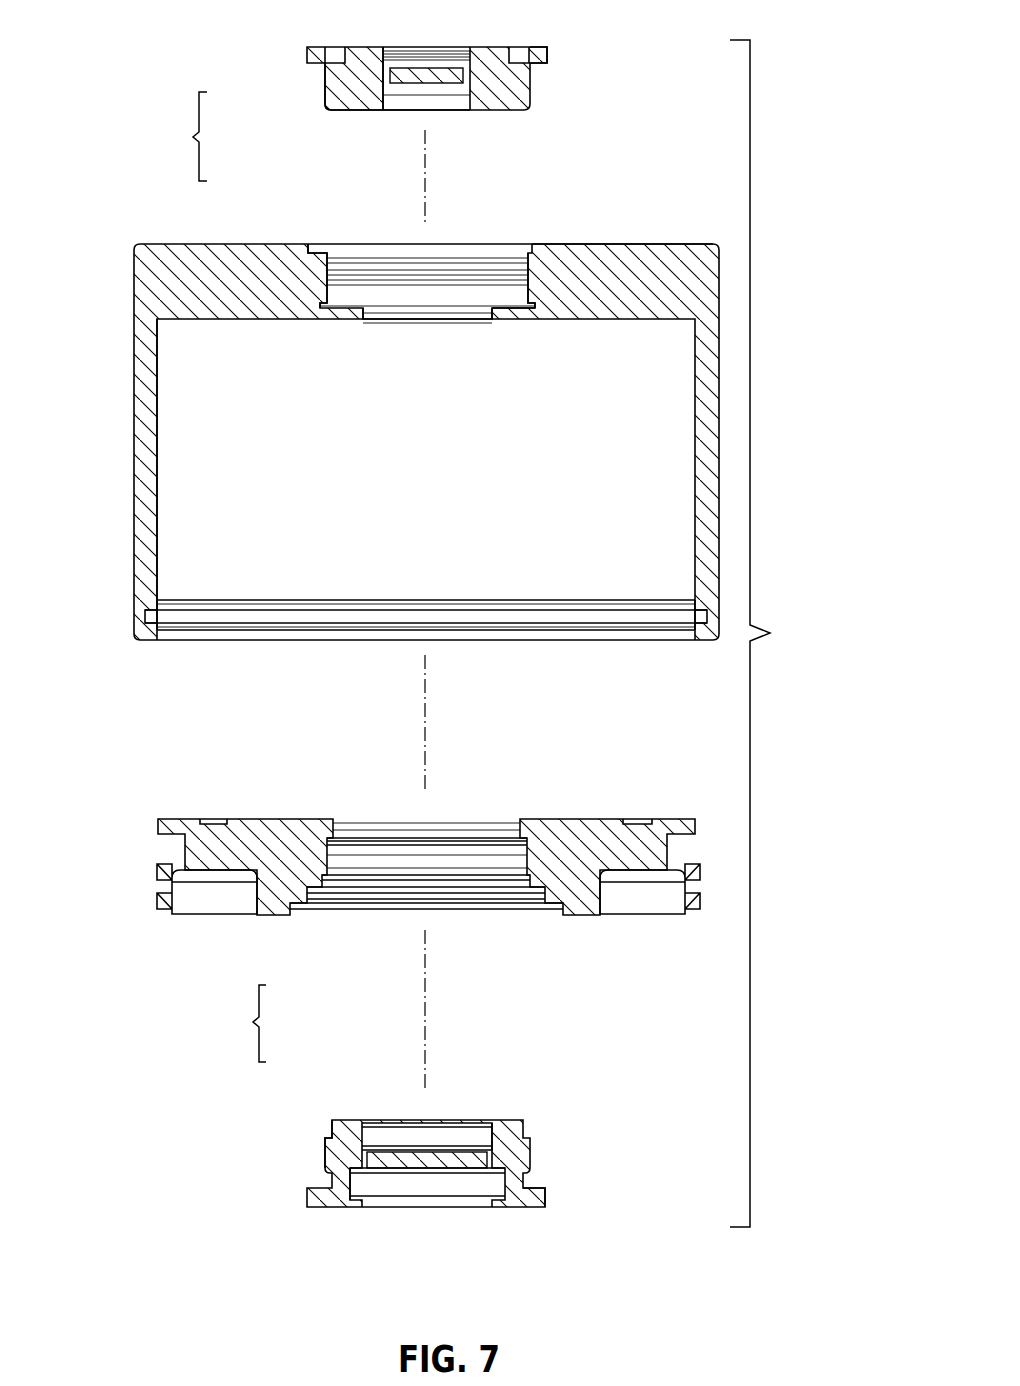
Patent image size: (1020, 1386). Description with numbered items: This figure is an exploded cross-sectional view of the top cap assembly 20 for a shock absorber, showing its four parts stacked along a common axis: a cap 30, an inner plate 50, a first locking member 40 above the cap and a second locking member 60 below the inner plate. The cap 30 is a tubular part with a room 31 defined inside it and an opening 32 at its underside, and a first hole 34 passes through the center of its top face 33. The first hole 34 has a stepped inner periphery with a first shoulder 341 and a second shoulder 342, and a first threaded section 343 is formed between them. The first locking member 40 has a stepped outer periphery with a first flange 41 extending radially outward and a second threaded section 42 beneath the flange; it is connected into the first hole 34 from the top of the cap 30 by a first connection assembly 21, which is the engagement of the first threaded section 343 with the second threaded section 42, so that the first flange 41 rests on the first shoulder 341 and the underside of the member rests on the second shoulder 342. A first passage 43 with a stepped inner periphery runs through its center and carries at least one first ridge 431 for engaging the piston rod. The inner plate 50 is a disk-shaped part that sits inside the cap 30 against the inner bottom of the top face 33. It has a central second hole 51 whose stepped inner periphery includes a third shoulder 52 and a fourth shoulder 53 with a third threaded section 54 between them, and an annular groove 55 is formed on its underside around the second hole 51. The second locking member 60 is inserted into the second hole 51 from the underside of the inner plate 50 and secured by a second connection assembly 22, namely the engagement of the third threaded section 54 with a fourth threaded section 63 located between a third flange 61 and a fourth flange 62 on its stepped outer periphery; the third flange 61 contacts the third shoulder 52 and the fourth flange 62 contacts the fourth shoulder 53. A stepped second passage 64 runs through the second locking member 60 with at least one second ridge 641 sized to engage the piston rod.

The top cap assembly 20 is at (775, 633).
The first connection assembly 21 is at (183, 136).
The second connection assembly 22 is at (242, 1023).
The cap 30 is at (135, 240).
The room 31 is at (195, 490).
The opening 32 is at (215, 642).
The top face 33 is at (612, 240).
The first hole 34 is at (420, 292).
The first shoulder 341 is at (537, 256).
The second shoulder 342 is at (507, 295).
The first threaded section 343 is at (330, 276).
The first locking member 40 is at (305, 45).
The first flange 41 is at (547, 55).
The second threaded section 42 is at (330, 85).
The first passage 43 is at (444, 102).
The first ridge 431 is at (385, 75).
The inner plate 50 is at (157, 818).
The second hole 51 is at (445, 865).
The third shoulder 52 is at (527, 845).
The fourth shoulder 53 is at (540, 892).
The third threaded section 54 is at (345, 858).
The annular groove 55 is at (640, 912).
The second locking member 60 is at (305, 1207).
The third flange 61 is at (530, 1128).
The fourth flange 62 is at (545, 1198).
The fourth threaded section 63 is at (325, 1158).
The second passage 64 is at (455, 1182).
The second ridge 641 is at (378, 1163).